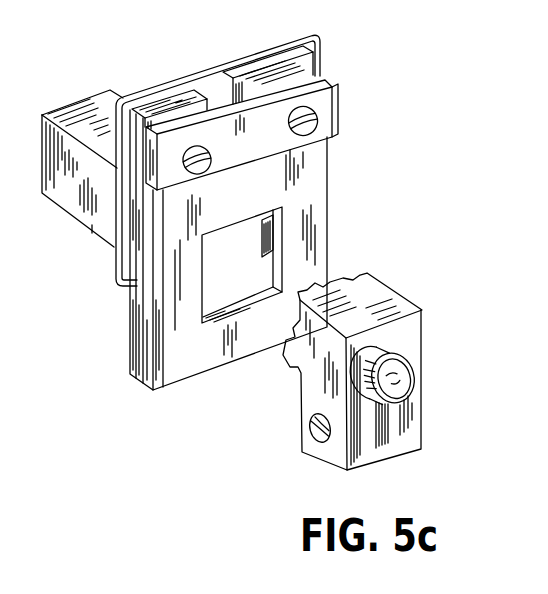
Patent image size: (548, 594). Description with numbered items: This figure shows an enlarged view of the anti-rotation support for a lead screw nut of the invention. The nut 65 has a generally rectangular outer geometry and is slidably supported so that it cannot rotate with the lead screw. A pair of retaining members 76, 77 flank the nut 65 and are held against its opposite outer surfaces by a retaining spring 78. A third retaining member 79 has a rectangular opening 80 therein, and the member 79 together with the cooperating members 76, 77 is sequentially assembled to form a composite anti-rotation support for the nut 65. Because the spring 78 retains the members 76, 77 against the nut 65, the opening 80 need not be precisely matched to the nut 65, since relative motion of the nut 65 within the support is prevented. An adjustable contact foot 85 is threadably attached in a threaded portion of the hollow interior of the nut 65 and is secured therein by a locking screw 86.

The nut 65 is at (68, 197).
The retaining member 76 is at (187, 100).
The retaining member 77 is at (283, 63).
The retaining spring 78 is at (211, 66).
The third retaining member 79 is at (327, 181).
The rectangular opening 80 is at (218, 278).
The adjustable contact foot 85 is at (403, 370).
The locking screw 86 is at (318, 438).